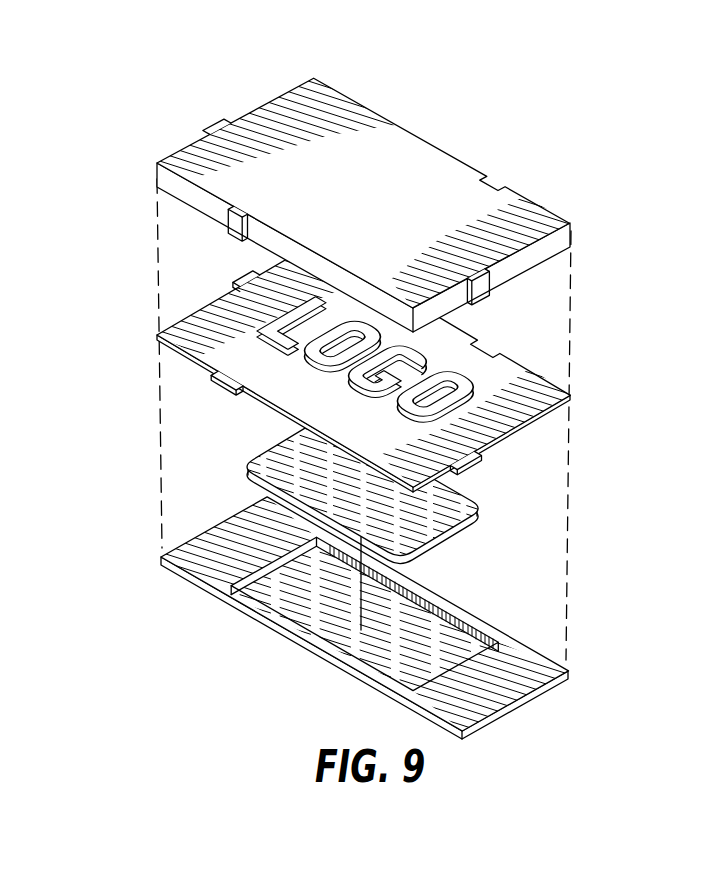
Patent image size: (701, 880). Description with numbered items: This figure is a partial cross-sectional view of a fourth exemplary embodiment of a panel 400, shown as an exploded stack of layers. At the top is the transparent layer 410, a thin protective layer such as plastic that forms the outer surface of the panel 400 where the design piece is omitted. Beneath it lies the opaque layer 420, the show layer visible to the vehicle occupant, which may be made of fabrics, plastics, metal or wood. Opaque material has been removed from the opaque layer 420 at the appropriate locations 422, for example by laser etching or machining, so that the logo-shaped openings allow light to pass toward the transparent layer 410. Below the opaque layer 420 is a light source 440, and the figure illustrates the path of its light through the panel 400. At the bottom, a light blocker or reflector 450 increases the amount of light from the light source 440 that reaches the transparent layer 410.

The panel 400 is at (612, 422).
The transparent layer 410 is at (438, 165).
The opaque layer 420 is at (350, 440).
The locations 422 is at (468, 380).
The light source 440 is at (443, 541).
The light blocker or reflector 450 is at (210, 593).